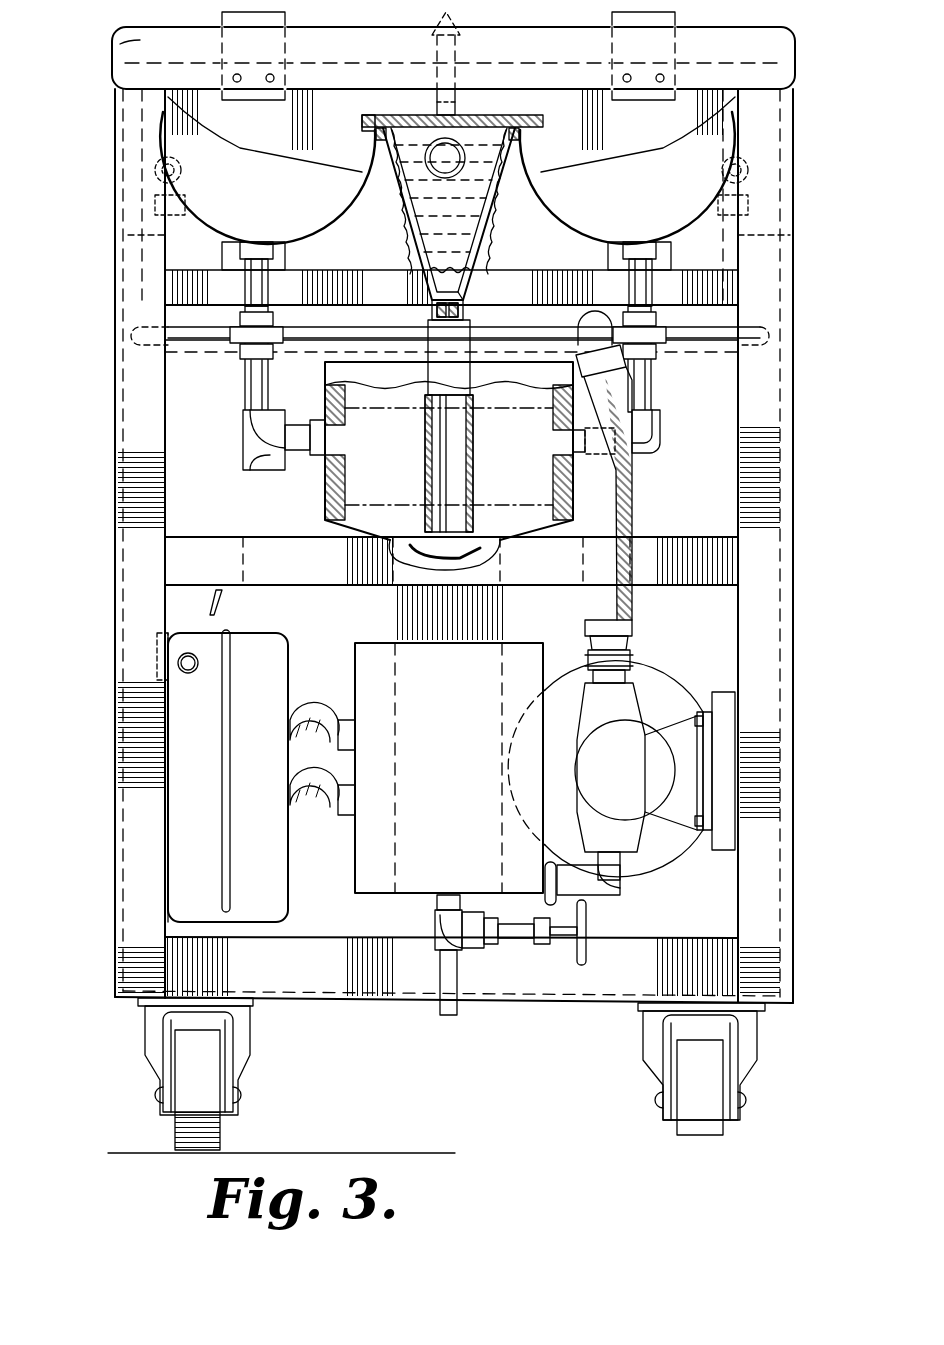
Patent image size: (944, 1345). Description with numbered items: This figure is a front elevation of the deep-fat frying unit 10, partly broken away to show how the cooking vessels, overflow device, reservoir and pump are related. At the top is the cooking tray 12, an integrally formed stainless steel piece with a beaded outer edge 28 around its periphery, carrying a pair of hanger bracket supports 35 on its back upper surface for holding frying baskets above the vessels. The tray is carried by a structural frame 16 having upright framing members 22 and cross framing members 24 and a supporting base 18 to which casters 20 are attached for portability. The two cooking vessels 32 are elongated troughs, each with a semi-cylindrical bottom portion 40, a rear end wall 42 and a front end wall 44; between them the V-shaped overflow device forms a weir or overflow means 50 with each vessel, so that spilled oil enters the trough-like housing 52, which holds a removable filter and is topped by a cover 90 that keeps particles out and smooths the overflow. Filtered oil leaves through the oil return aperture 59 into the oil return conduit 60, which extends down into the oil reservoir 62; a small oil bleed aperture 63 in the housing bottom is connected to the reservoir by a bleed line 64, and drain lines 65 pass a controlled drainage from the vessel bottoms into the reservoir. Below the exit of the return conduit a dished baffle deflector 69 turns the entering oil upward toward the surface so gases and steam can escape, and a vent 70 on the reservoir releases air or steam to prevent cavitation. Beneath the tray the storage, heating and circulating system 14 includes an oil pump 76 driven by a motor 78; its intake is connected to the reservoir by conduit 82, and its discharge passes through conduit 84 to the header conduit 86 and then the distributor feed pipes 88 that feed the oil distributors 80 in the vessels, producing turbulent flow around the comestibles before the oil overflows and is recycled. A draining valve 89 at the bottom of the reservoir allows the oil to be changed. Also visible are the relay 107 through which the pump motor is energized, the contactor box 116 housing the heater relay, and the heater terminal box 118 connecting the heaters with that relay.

The deep-fat frying unit 10 is at (800, 330).
The cooking tray 12 is at (738, 26).
The cooking oil storage, heating and circulating system 14 is at (722, 634).
The structural frame 16 is at (800, 302).
The supporting base 18 is at (605, 985).
The casters 20 is at (250, 1048).
The upright framing members 22 is at (135, 485).
The cross framing members 24 is at (545, 275).
The beaded outer edge 28 is at (120, 44).
The cooking vessels 32 is at (352, 200).
The hanger bracket supports 35 is at (285, 20).
The semi-cylindrical bottom portion 40 is at (300, 235).
The rear end wall 42 is at (140, 115).
The front end wall 44 is at (447, 274).
The weir or overflow means 50 is at (380, 128).
The trough-like housing 52 is at (428, 270).
The oil return aperture 59 is at (472, 140).
The oil return conduit 60 is at (428, 345).
The oil reservoir or tank 62 is at (325, 492).
The oil bleed aperture 63 is at (463, 300).
The bleed line 64 is at (462, 310).
The drain lines 65 is at (268, 372).
The dished baffle deflector 69 is at (490, 542).
The vent 70 is at (458, 16).
The oil pump 76 is at (635, 797).
The motor 78 is at (655, 690).
The oil distributors 80 is at (182, 172).
The conduit 82 is at (600, 898).
The conduit 84 is at (632, 500).
The header conduit 86 is at (200, 340).
The distributor feed pipes 88 is at (128, 235).
The draining valve 89 is at (480, 950).
The cover 90 is at (372, 112).
The relay 107 is at (190, 427).
The contactor box 116 is at (188, 880).
The heater terminal box 118 is at (372, 893).